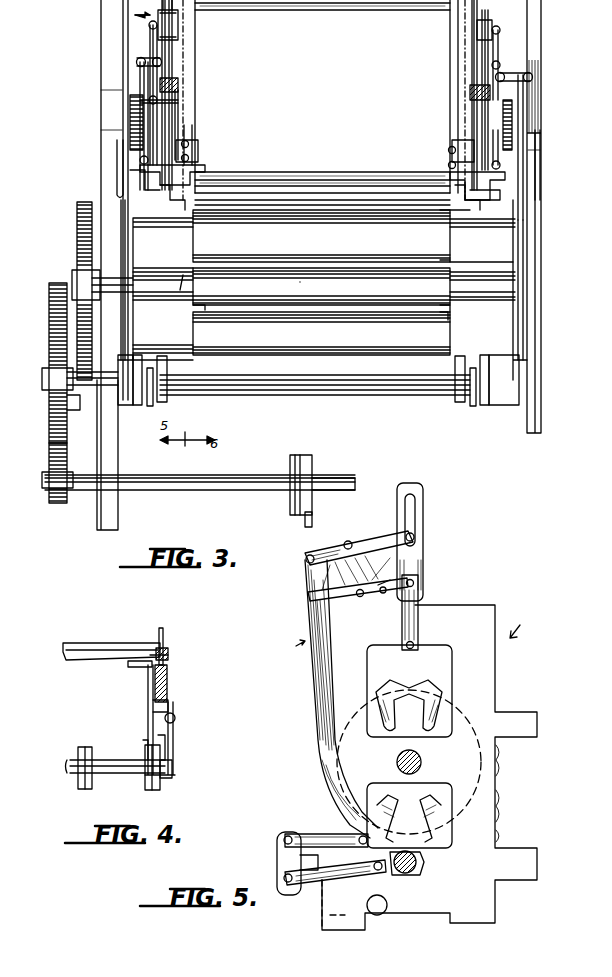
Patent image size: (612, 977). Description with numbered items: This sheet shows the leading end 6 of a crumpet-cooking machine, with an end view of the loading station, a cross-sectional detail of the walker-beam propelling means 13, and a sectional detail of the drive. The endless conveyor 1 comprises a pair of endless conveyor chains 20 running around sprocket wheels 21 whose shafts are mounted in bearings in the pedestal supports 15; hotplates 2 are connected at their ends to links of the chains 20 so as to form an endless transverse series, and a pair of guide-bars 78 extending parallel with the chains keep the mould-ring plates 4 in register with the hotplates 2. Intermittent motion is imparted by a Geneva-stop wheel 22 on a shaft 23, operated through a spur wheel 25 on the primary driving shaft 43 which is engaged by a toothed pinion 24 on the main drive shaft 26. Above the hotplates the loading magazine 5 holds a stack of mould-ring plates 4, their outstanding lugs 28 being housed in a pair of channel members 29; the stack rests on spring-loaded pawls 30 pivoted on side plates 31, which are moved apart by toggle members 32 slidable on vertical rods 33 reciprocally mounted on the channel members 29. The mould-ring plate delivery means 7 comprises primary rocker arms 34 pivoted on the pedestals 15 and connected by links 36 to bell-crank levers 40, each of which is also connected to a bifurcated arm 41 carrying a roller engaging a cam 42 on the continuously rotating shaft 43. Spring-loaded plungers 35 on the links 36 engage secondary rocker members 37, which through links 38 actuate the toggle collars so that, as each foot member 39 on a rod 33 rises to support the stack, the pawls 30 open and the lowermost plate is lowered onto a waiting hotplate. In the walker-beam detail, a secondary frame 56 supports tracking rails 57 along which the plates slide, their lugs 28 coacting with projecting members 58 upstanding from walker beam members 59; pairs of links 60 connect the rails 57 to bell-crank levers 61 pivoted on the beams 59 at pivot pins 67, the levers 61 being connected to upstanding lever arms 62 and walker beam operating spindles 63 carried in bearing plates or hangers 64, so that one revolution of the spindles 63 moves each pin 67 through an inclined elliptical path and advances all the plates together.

In FIG. 3, the endless conveyor 1 is at (445, 342).
In FIG. 3, the hotplates 2 is at (296, 290).
In FIG. 4, the mould-ring plates 4 is at (104, 643).
In FIG. 3, the loading magazine 5 is at (140, 24).
In FIG. 5, the loading magazine 5 is at (428, 542).
In FIG. 5, the leading end 6 is at (521, 620).
In FIG. 3, the mould-ring plate delivery means 7 is at (135, 46).
In FIG. 5, the mould-ring plate delivery means 7 is at (287, 649).
In FIG. 4, the mould-ring plate propelling means 13 is at (189, 712).
In FIG. 3, the pedestal supports 15 is at (108, 158).
In FIG. 5, the pedestal supports 15 is at (490, 676).
In FIG. 3, the endless conveyor chains 20 is at (215, 310).
In FIG. 3, the sprocket wheels 21 is at (440, 318).
In FIG. 3, the Geneva-stop wheel 22 is at (76, 236).
In FIG. 5, the Geneva-stop wheel 22 is at (409, 691).
In FIG. 3, the shaft 23 is at (185, 300).
In FIG. 5, the shaft 23 is at (398, 756).
In FIG. 3, the toothed pinion 24 is at (55, 505).
In FIG. 3, the spur wheel 25 is at (48, 410).
In FIG. 5, the spur wheel 25 is at (315, 882).
In FIG. 3, the main drive shaft 26 is at (194, 492).
In FIG. 3, the outstanding lugs 28 is at (198, 24).
In FIG. 4, the outstanding lugs 28 is at (166, 652).
In FIG. 3, the channel members 29 is at (190, 68).
In FIG. 3, the spring-loaded pawls 30 is at (206, 170).
In FIG. 3, the side plates 31 is at (200, 150).
In FIG. 3, the toggle members 32 is at (190, 134).
In FIG. 3, the vertical rods 33 is at (172, 108).
In FIG. 3, the primary rocker arms 34 is at (136, 62).
In FIG. 5, the primary rocker arms 34 is at (377, 540).
In FIG. 3, the spring loaded plungers 35 is at (514, 118).
In FIG. 5, the spring loaded plungers 35 is at (306, 593).
In FIG. 3, the links 36 is at (128, 330).
In FIG. 5, the links 36 is at (318, 702).
In FIG. 5, the secondary rocker members 37 is at (385, 598).
In FIG. 3, the links 38 is at (128, 145).
In FIG. 5, the links 38 is at (420, 632).
In FIG. 3, the foot member 39 is at (165, 190).
In FIG. 3, the bell-crank levers 40 is at (508, 438).
In FIG. 5, the bell-crank levers 40 is at (278, 845).
In FIG. 3, the bifurcated arm 41 is at (152, 366).
In FIG. 5, the bifurcated arm 41 is at (346, 880).
In FIG. 3, the cam 42 is at (178, 400).
In FIG. 5, the cam 42 is at (392, 892).
In FIG. 3, the primary driving shaft 43 is at (296, 400).
In FIG. 5, the primary driving shaft 43 is at (428, 858).
In FIG. 4, the secondary frame 56 is at (142, 668).
In FIG. 4, the tracking rails 57 is at (170, 660).
In FIG. 4, the projecting members 58 is at (163, 630).
In FIG. 4, the walker beam members 59 is at (168, 682).
In FIG. 4, the links 60 is at (146, 723).
In FIG. 4, the bell-crank levers 61 is at (175, 764).
In FIG. 4, the upstanding lever arms 62 is at (168, 748).
In FIG. 4, the walker beam operating spindles 63 is at (124, 775).
In FIG. 4, the bearing plates or hangers 64 is at (145, 744).
In FIG. 4, the bell-crank lever pivot pin 67 is at (176, 720).
In FIG. 3, the guide-bars 78 is at (168, 218).